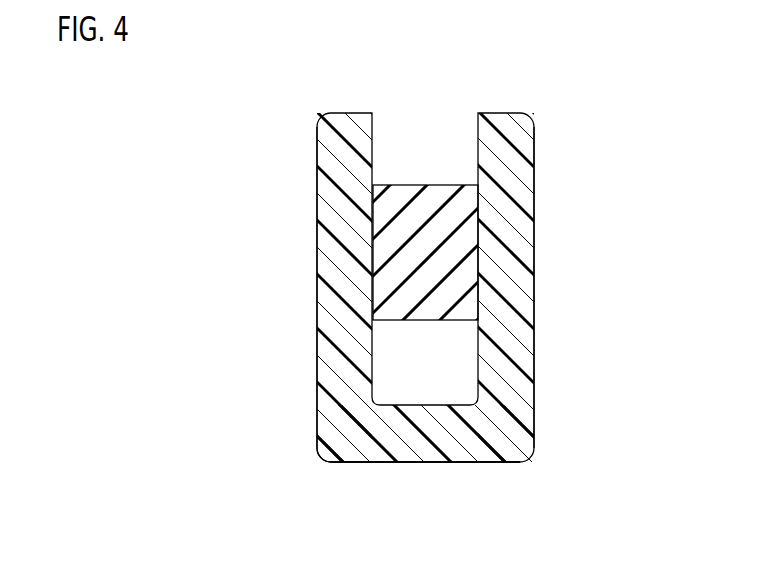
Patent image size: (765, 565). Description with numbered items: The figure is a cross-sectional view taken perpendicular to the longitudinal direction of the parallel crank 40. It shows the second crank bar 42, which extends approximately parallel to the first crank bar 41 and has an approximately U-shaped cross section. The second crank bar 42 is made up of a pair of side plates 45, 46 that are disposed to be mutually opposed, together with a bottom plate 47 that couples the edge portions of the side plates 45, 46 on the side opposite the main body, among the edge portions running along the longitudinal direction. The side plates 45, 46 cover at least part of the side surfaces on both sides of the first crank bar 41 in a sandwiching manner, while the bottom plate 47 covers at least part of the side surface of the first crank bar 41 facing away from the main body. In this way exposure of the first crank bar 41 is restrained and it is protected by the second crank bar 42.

The parallel crank 40 is at (557, 98).
The first crank bar 41 is at (404, 188).
The second crank bar 42 is at (299, 453).
The side plate 45 is at (330, 220).
The side plate 46 is at (517, 236).
The bottom plate 47 is at (422, 447).